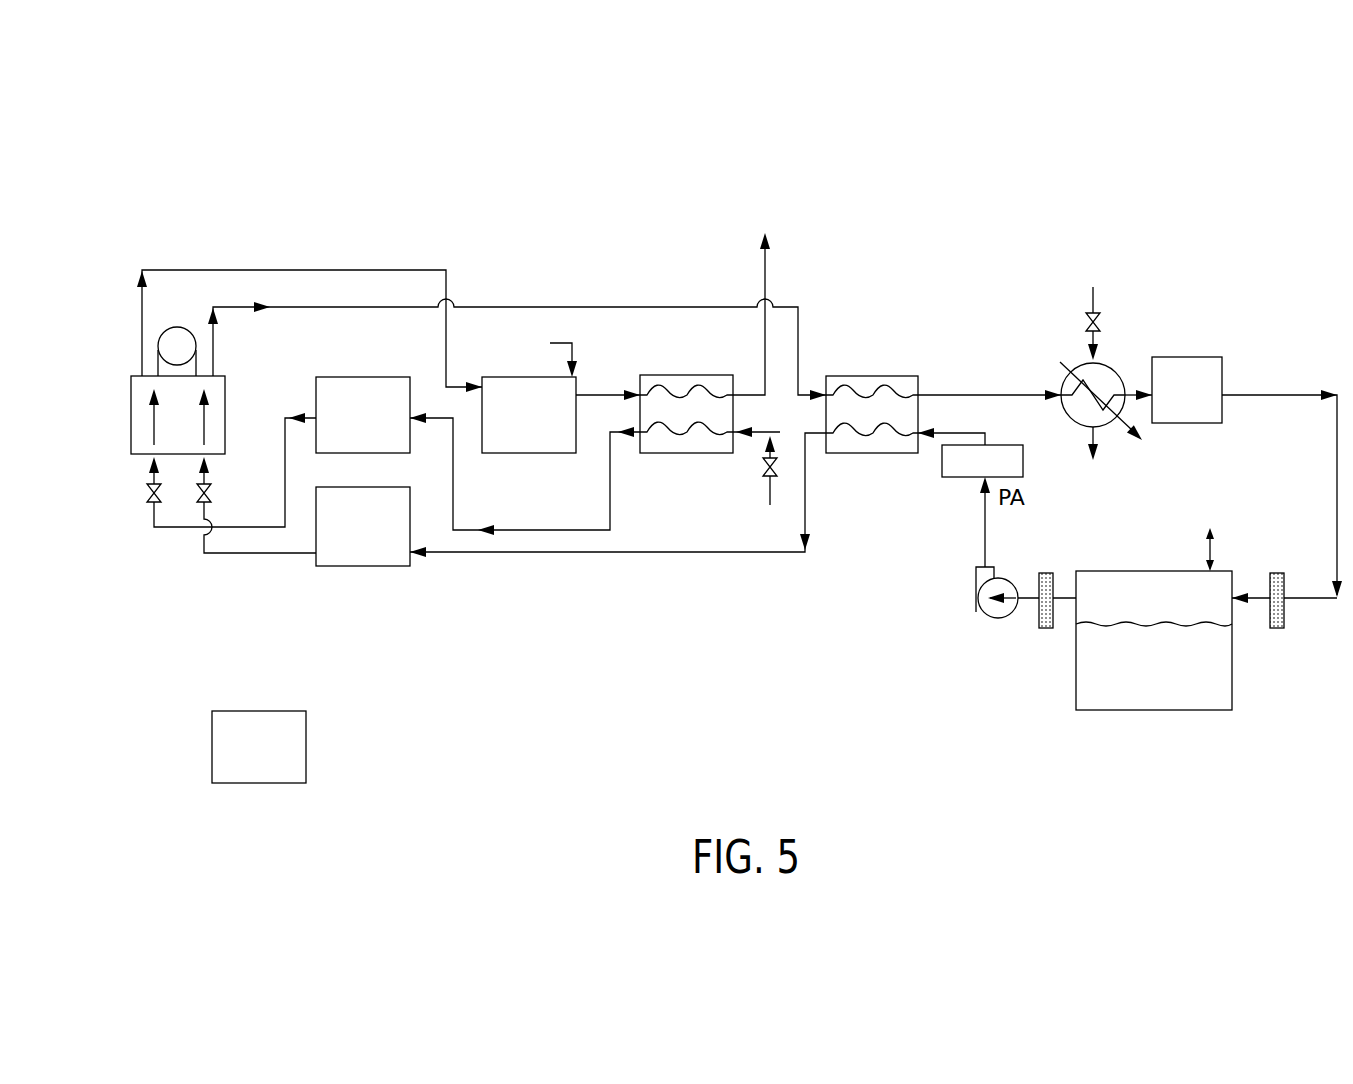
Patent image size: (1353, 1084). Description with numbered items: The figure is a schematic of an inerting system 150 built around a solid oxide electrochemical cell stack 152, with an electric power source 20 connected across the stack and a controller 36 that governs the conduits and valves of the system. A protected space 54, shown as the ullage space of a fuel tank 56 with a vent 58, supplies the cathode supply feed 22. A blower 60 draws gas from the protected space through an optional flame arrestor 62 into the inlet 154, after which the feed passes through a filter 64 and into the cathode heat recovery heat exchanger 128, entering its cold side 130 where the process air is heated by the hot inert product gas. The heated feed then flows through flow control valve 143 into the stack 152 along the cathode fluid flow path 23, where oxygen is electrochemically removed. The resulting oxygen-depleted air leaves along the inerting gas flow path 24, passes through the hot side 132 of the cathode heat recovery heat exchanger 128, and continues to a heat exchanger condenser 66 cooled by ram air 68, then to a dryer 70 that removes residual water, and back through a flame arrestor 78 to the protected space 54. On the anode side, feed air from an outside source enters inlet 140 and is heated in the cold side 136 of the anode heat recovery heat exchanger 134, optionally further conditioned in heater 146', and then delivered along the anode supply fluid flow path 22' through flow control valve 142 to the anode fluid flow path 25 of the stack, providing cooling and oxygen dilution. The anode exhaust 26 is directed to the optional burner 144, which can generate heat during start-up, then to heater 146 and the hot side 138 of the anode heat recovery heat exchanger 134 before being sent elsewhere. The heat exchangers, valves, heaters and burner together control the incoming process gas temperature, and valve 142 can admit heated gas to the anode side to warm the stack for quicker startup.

The inerting system 150 is at (1033, 202).
The solid oxide electrochemical cell stack 152 is at (131, 393).
The electric power source 20 is at (160, 345).
The anode fluid flow path 25 is at (152, 422).
The cathode fluid flow path 23 is at (205, 424).
The anode exhaust 26 is at (157, 270).
The inerting gas flow path 24 is at (242, 307).
The heater 146 is at (363, 383).
The heater 146' is at (363, 561).
The burner 144 is at (517, 377).
The cathode supply feed 22 is at (260, 564).
The anode supply fluid flow path 22' is at (224, 504).
The flow control valve 142 is at (148, 492).
The flow control valve 143 is at (210, 492).
The hot side 138 is at (683, 383).
The anode heat recovery heat exchanger 134 is at (703, 402).
The cold side 136 is at (680, 440).
The inlet 140 is at (770, 497).
The hot side 132 is at (864, 383).
The cathode heat recovery heat exchanger 128 is at (885, 402).
The cold side 130 is at (860, 440).
The filter 64 is at (1023, 465).
The inlet 154 is at (985, 553).
The heat exchanger condenser 66 is at (1063, 412).
The ram air 68 is at (1097, 293).
The dryer 70 is at (1192, 357).
The flame arrestor 78 is at (1278, 630).
The vent 58 is at (1213, 548).
The protected space 54 is at (1125, 587).
The fuel tank 56 is at (1170, 710).
The flame arrestor 62 is at (1046, 630).
The blower 60 is at (985, 612).
The controller 36 is at (306, 742).